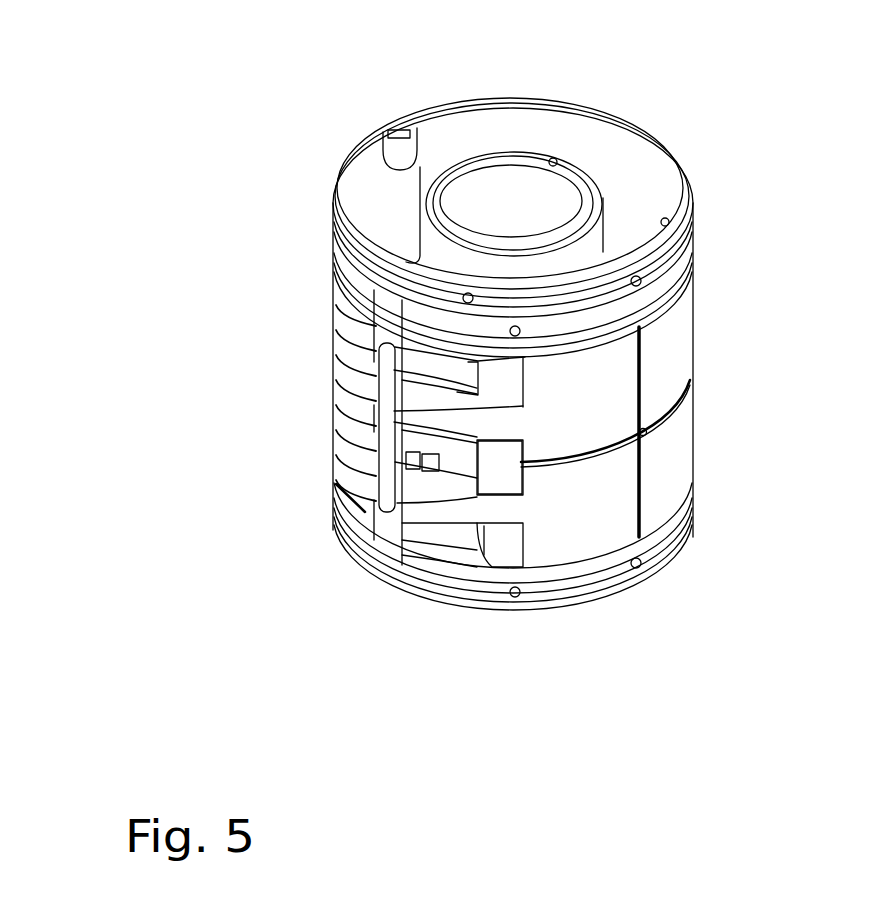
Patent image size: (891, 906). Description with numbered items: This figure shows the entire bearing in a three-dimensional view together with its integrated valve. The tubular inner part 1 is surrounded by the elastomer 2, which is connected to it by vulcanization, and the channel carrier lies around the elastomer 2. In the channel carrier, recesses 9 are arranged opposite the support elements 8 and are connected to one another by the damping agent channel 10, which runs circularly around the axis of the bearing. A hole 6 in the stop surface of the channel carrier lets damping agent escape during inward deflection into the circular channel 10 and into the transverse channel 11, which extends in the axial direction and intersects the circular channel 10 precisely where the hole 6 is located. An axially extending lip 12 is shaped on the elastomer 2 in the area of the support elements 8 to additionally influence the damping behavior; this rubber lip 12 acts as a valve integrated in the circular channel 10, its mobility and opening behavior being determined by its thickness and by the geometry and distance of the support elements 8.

The tubular inner part 1 is at (556, 160).
The elastomer 2 is at (625, 218).
The hole 6 is at (646, 433).
The support elements 8 is at (405, 487).
The recesses 9 is at (500, 455).
The damping agent channel 10 is at (672, 406).
The transverse channel 11 is at (643, 360).
The lip 12 is at (390, 440).